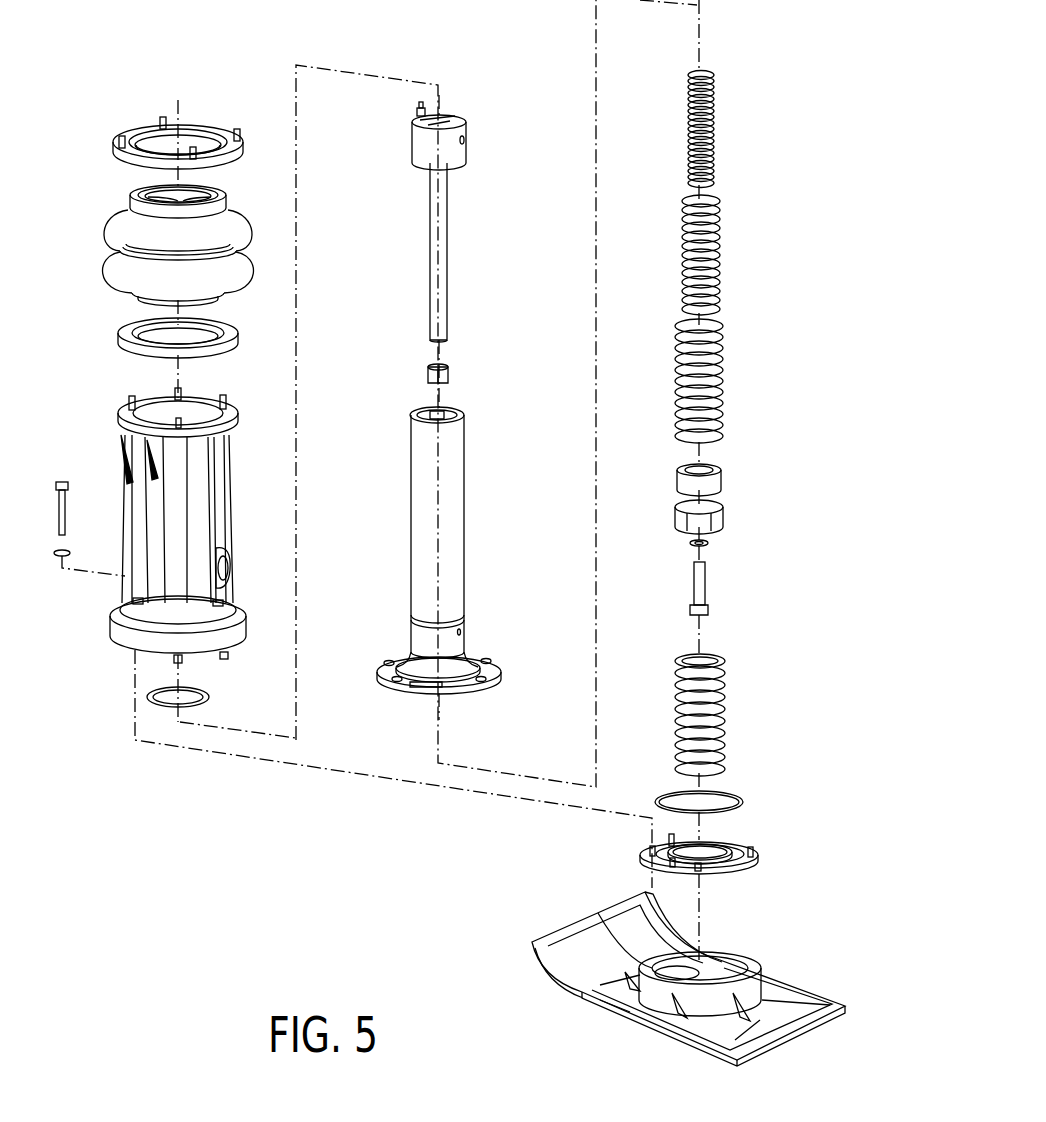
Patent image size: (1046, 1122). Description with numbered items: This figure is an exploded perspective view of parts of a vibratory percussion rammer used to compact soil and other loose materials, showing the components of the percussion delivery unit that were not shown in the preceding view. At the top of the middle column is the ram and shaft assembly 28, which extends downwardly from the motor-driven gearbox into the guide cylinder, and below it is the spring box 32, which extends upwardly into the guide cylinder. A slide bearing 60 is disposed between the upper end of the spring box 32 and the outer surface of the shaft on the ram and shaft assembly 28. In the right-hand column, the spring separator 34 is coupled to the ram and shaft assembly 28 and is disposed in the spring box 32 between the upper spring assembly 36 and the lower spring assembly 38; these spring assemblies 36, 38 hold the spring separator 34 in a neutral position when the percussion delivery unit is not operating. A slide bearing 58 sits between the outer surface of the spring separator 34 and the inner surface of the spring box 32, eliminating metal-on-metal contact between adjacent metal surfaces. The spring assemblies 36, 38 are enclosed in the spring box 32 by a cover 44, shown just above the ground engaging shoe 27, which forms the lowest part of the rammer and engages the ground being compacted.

The ground engaging shoe 27 is at (573, 937).
The ram and shaft assembly 28 is at (438, 204).
The spring box 32 is at (457, 537).
The spring separator 34 is at (683, 483).
The upper spring assembly 36 is at (712, 50).
The lower spring assembly 38 is at (712, 640).
The cover 44 is at (760, 863).
The slide bearing 58 is at (712, 524).
The slide bearing 60 is at (447, 378).